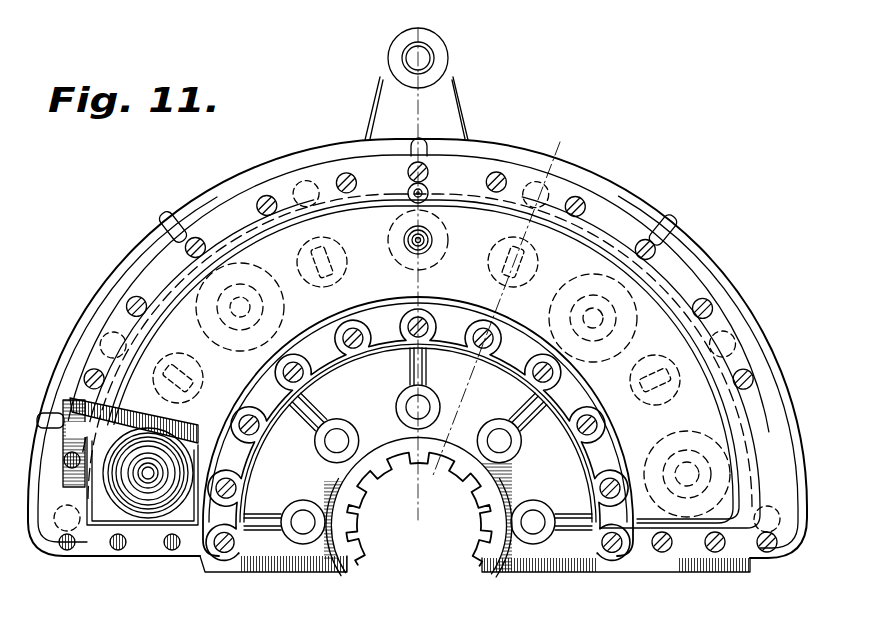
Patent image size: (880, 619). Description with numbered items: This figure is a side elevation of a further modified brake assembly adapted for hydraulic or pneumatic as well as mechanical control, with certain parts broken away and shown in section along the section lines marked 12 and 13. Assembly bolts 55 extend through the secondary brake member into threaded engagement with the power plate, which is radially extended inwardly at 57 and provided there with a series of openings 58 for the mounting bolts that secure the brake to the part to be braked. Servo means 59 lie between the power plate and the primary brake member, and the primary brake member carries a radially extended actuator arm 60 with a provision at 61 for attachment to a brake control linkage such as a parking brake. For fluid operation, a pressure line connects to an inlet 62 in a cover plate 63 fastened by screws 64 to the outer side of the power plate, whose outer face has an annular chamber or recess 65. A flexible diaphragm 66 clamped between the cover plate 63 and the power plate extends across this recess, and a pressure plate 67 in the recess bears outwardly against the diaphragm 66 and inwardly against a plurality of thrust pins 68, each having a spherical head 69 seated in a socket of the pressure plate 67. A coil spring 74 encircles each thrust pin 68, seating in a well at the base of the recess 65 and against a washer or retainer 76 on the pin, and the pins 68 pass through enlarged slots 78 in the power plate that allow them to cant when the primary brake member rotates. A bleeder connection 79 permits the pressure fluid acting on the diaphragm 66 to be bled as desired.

The section line 12- 12 is at (545, 139).
The section line 13- 13 is at (393, 22).
The assembly bolts 55 is at (67, 505).
The radially extended inward portion of power plate 57 is at (418, 437).
The openings 58 is at (406, 405).
The servo means 59 is at (206, 383).
The actuator arm 60 is at (455, 92).
The attachment provision 61 is at (436, 57).
The inlet 62 is at (441, 237).
The cover plate 63 is at (417, 355).
The screws 64 is at (252, 440).
The annular chamber or recess 65 is at (113, 512).
The flexible diaphragm 66 is at (86, 410).
The pressure plate 67 is at (76, 443).
The thrust pins 68 is at (264, 317).
The spherical head 69 is at (140, 484).
The coil spring 74 is at (176, 500).
The washer or retainer 76 is at (148, 490).
The slots 78 is at (255, 292).
The bleeder connection 79 is at (408, 196).